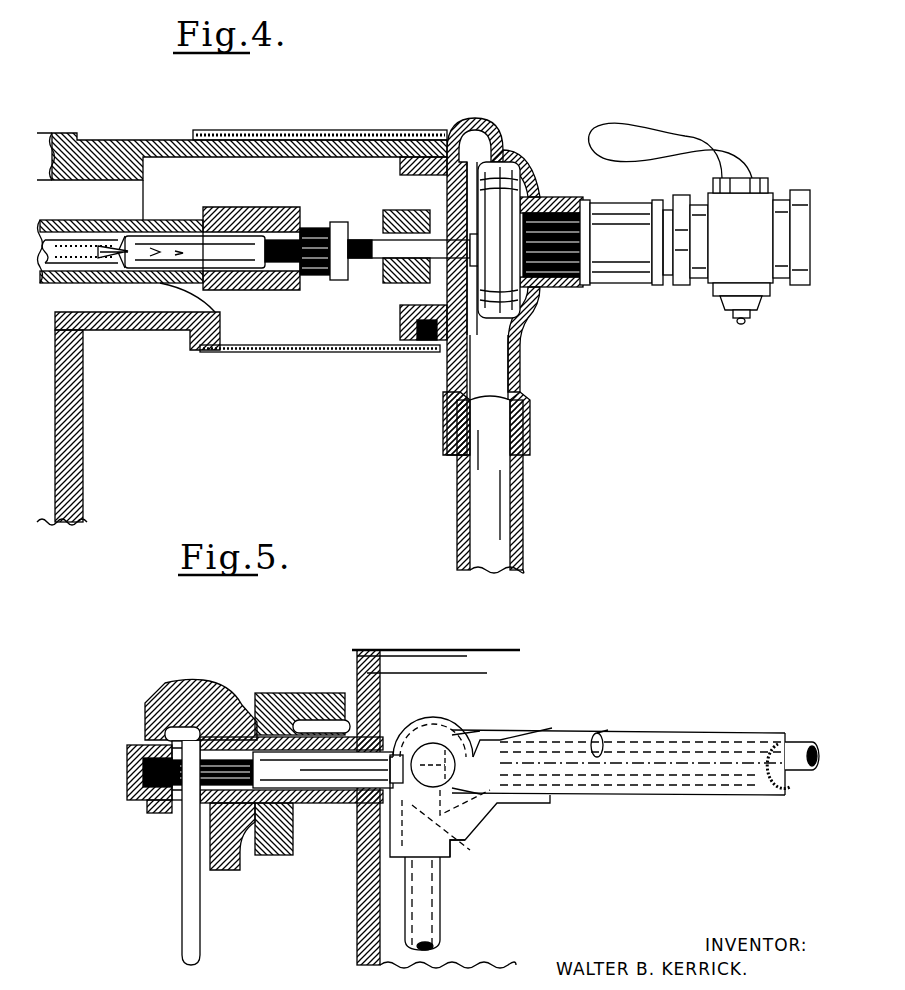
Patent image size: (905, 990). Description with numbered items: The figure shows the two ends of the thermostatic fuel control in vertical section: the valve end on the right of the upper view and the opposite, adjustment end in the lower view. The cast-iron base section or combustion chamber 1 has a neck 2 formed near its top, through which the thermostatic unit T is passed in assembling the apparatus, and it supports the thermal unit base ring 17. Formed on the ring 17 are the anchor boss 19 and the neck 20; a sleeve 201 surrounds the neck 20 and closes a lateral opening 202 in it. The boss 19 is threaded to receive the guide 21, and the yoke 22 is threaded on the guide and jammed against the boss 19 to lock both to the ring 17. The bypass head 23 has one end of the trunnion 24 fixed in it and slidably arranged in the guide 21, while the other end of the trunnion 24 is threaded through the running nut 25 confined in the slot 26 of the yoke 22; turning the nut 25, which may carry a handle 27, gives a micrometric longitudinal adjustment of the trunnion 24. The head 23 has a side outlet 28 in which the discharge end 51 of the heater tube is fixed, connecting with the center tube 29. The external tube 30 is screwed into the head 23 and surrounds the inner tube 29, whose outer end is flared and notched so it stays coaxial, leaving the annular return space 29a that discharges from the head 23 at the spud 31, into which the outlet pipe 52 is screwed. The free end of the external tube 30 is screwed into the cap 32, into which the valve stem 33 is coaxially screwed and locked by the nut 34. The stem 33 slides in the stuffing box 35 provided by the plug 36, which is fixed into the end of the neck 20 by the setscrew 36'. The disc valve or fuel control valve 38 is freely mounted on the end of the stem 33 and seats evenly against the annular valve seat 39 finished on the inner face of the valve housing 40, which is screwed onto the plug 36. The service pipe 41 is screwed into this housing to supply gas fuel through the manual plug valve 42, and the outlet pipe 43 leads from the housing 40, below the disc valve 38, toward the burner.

In FIG. 4, the base section or combustion chamber 1 is at (50, 420).
In FIG. 5, the base section or combustion chamber 1 is at (366, 914).
In FIG. 4, the neck 2 is at (143, 324).
In FIG. 5, the thermal unit base ring 17 is at (300, 697).
In FIG. 5, the anchor boss 19 is at (273, 838).
In FIG. 4, the neck 20 is at (135, 144).
In FIG. 4, the sleeve 201 is at (304, 133).
In FIG. 4, the lateral opening 202 is at (310, 337).
In FIG. 5, the guide 21 is at (315, 803).
In FIG. 5, the yoke 22 is at (197, 683).
In FIG. 5, the bypass head 23 is at (430, 720).
In FIG. 5, the trunnion 24 is at (365, 763).
In FIG. 5, the running nut 25 is at (147, 743).
In FIG. 5, the slot 26 is at (183, 730).
In FIG. 5, the handle 27 is at (190, 887).
In FIG. 5, the side outlet 28 is at (467, 732).
In FIG. 4, the center tube 29 is at (93, 228).
In FIG. 5, the center tube 29 is at (793, 742).
In FIG. 4, the annular return space 29a is at (111, 269).
In FIG. 5, the annular return space 29a is at (707, 781).
In FIG. 4, the external tube 30 is at (148, 272).
In FIG. 5, the external tube 30 is at (668, 730).
In FIG. 5, the spud 31 is at (453, 845).
In FIG. 4, the cap 32 is at (263, 289).
In FIG. 4, the valve stem 33 is at (372, 232).
In FIG. 4, the nut 34 is at (323, 218).
In FIG. 4, the stuffing box 35 is at (398, 223).
In FIG. 4, the plug 36 is at (472, 269).
In FIG. 4, the setscrew 36' is at (412, 353).
In FIG. 4, the disc valve or fuel control valve 38 is at (519, 318).
In FIG. 4, the annular valve seat 39 is at (519, 338).
In FIG. 4, the valve housing 40 is at (503, 147).
In FIG. 4, the service pipe 41 is at (617, 252).
In FIG. 4, the manual plug valve 42 is at (748, 215).
In FIG. 4, the outlet pipe 43 is at (488, 518).
In FIG. 5, the discharge end of the heater tube 51 is at (600, 731).
In FIG. 5, the outlet pipe 52 is at (440, 912).
In FIG. 4, the thermostatic unit T is at (160, 221).
In FIG. 5, the thermostatic unit T is at (723, 727).